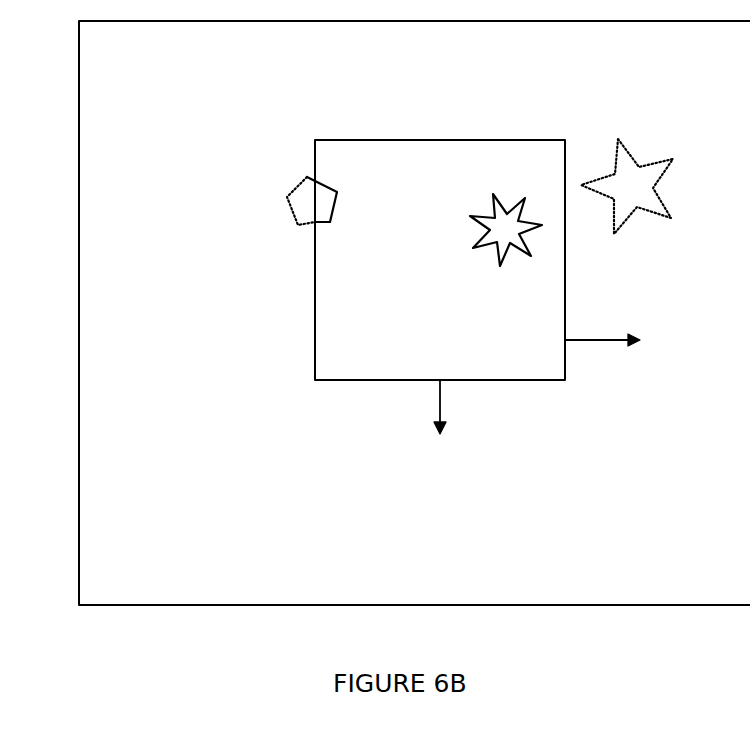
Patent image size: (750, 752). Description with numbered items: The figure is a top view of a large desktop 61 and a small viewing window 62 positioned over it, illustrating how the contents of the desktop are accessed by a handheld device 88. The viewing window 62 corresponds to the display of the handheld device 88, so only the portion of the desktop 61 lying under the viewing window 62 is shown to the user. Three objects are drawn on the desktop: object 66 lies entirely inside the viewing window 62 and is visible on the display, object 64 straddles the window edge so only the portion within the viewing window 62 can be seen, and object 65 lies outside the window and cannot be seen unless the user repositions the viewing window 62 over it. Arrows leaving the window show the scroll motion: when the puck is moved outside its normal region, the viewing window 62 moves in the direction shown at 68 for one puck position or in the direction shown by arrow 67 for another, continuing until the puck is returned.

In FIG. 6B, the desktop 61 is at (84, 257).
In FIG. 6B, the viewing window 62 is at (315, 292).
In FIG. 6B, the object 64 is at (298, 184).
In FIG. 6B, the object 65 is at (616, 234).
In FIG. 6B, the object 66 is at (471, 216).
In FIG. 6B, the arrow 67 is at (440, 403).
In FIG. 6B, the direction of window movement 68 is at (597, 343).
The handheld device 88 is at (10, 751).